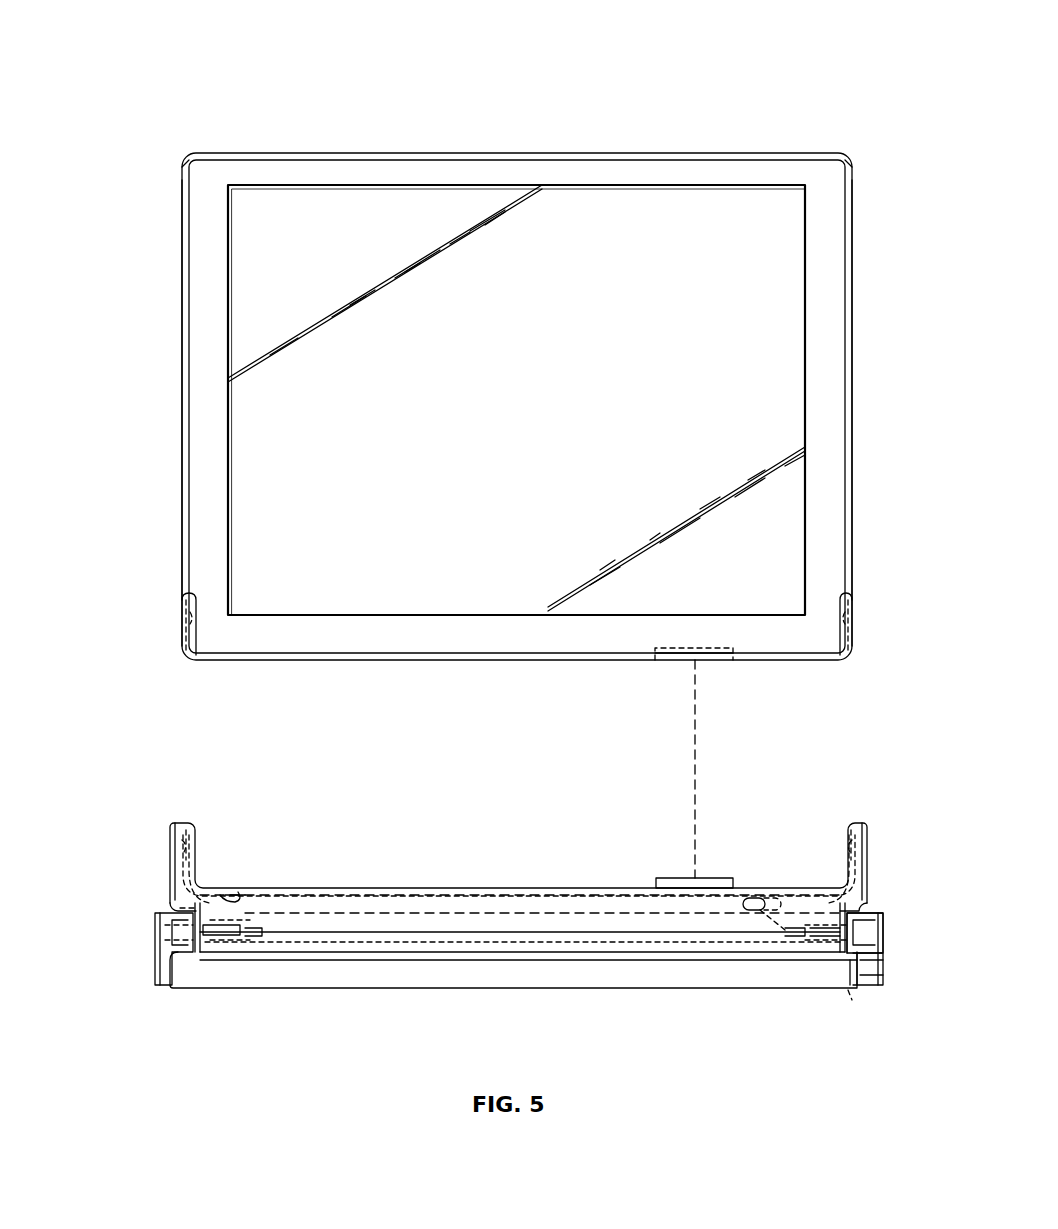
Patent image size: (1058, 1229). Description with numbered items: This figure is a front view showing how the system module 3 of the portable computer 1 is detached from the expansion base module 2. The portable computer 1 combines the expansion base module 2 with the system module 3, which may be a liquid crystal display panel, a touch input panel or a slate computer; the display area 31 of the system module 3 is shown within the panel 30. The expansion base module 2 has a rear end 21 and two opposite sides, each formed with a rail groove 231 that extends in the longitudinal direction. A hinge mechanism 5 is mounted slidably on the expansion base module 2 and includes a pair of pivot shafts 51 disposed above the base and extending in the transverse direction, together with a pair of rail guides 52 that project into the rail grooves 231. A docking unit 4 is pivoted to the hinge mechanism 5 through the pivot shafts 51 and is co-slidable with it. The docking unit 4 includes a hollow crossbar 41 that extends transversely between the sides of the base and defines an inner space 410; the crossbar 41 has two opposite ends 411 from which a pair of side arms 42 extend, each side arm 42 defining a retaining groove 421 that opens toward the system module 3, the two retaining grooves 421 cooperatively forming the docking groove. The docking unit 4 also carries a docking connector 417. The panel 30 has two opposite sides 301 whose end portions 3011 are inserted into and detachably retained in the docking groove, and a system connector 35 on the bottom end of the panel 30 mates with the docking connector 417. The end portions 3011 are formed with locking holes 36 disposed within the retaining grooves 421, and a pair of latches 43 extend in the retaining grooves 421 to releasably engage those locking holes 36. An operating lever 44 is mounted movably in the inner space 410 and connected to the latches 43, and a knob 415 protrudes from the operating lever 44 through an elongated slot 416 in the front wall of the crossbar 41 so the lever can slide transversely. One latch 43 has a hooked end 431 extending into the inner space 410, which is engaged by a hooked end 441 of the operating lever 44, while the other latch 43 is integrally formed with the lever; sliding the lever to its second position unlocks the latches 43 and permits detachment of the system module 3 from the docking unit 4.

The portable computer 1 is at (192, 90).
The expansion base module 2 is at (262, 996).
The rear end 21 is at (352, 982).
The rail groove 231 is at (842, 988).
The system module 3 is at (325, 147).
The panel 30 is at (853, 389).
The opposite sides 301 is at (183, 396).
The end portions 3011 is at (190, 600).
The display panel 31 is at (568, 208).
The system connector 35 is at (674, 666).
The locking holes 36 is at (190, 618).
The docking unit 4 is at (162, 833).
The crossbar 41 is at (440, 920).
The inner space 410 is at (473, 915).
The opposite ends 411 is at (830, 916).
The knob 415 is at (754, 900).
The elongated slot 416 is at (770, 936).
The docking connector 417 is at (668, 878).
The side arms 42 is at (168, 851).
The retaining grooves 421 is at (198, 833).
The latches 43 is at (206, 842).
The hooked end 431 is at (234, 898).
The operating lever 44 is at (524, 905).
The hooked end 441 is at (174, 914).
The hinge mechanism 5 is at (157, 952).
The pivot shafts 51 is at (246, 930).
The rail guides 52 is at (884, 968).